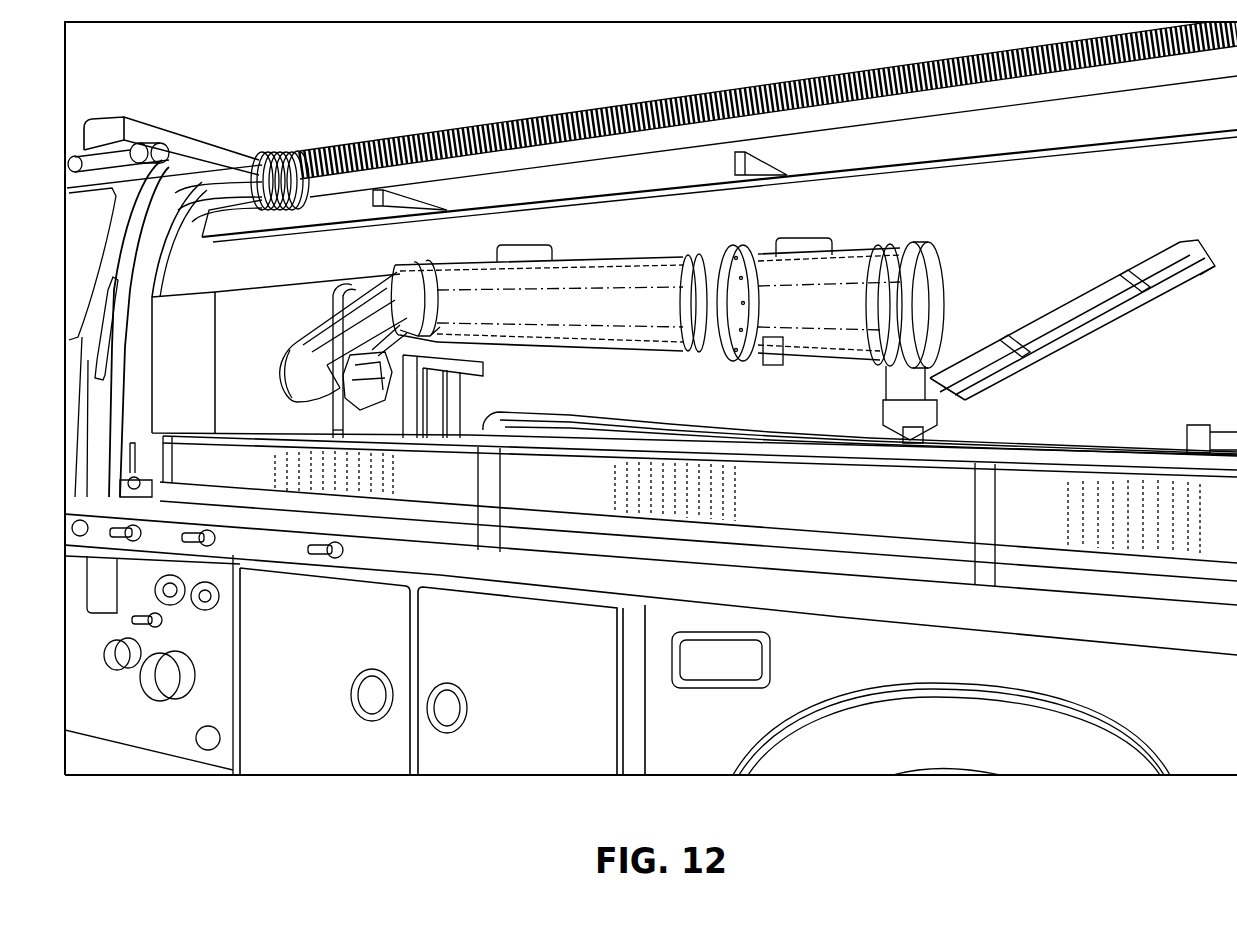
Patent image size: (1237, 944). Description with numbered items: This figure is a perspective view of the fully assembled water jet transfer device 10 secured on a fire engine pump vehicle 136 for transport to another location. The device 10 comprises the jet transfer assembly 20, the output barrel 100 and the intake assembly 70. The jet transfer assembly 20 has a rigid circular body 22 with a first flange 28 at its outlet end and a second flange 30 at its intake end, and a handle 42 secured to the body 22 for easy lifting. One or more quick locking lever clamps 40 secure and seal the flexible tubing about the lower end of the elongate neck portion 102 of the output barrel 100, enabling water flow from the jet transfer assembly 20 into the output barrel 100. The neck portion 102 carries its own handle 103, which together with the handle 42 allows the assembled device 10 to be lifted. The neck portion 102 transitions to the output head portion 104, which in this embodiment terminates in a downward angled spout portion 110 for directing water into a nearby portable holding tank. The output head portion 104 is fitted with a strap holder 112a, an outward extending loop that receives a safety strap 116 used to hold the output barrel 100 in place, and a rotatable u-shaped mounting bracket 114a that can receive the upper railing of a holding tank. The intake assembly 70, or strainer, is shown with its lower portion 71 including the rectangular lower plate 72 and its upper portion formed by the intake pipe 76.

The water jet transfer device 10 is at (729, 307).
The jet transfer assembly 20 is at (864, 250).
The body 22 is at (812, 317).
The first flange 28 is at (745, 246).
The second flange 30 is at (892, 246).
The quick locking lever clamp 40 is at (708, 254).
The handle 42 is at (805, 238).
The intake assembly 70 is at (1072, 285).
The lower portion 71 is at (1168, 240).
The lower plate 72 is at (1138, 305).
The intake pipe 76 is at (980, 244).
The output barrel 100 is at (718, 300).
The elongate neck portion 102 is at (562, 317).
The handle 103 is at (522, 245).
The output head portion 104 is at (300, 335).
The downward angled spout portion 110 is at (282, 372).
The strap holder 112a is at (338, 295).
The u-shaped mounting bracket 114a is at (366, 400).
The safety strap 116 is at (333, 422).
The fire engine pump vehicle 136 is at (274, 142).